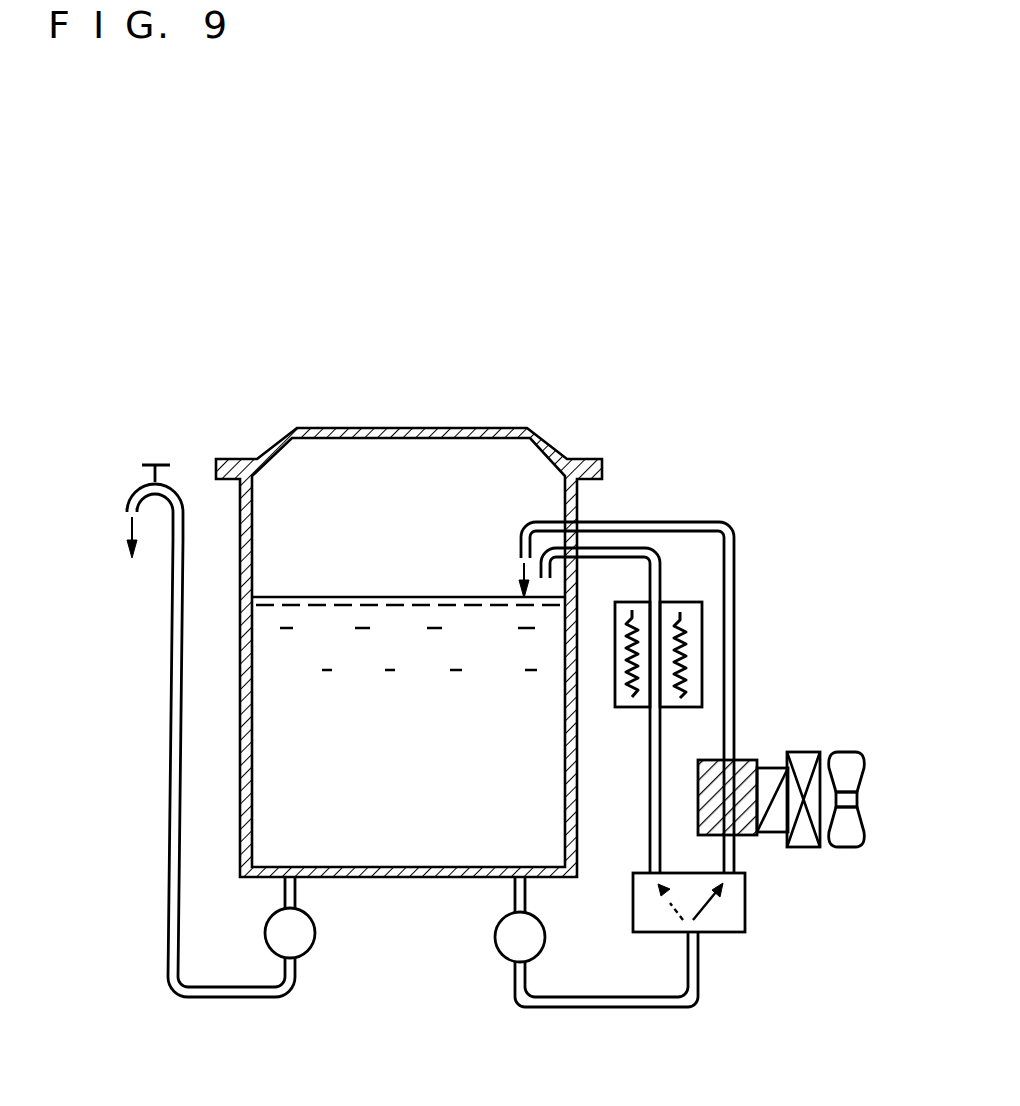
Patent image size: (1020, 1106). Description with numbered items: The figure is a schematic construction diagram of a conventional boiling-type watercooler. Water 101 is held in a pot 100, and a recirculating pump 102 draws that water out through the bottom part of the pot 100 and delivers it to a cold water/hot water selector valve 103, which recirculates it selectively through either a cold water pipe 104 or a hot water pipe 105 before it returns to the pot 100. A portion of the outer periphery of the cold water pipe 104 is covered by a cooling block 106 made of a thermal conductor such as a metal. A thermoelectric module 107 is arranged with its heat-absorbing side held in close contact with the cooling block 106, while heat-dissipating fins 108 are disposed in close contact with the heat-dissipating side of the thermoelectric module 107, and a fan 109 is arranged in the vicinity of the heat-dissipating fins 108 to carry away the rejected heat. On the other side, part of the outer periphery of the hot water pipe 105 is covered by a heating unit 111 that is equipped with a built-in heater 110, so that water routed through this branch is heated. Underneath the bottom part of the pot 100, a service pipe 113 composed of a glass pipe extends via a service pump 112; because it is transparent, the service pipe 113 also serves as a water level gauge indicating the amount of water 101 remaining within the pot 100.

The pot 100 is at (390, 880).
The water 101 is at (415, 763).
The recirculating pump 102 is at (492, 940).
The cold water/hot water selector valve 103 is at (728, 933).
The cold water pipe 104 is at (736, 640).
The hot water pipe 105 is at (643, 830).
The cooling block 106 is at (750, 760).
The thermoelectric module 107 is at (773, 822).
The heat-dissipating fins 108 is at (805, 750).
The fan 109 is at (850, 838).
The heater 110 is at (677, 633).
The heating unit 111 is at (677, 602).
The service pump 112 is at (312, 950).
The service pipe 113 is at (227, 1000).